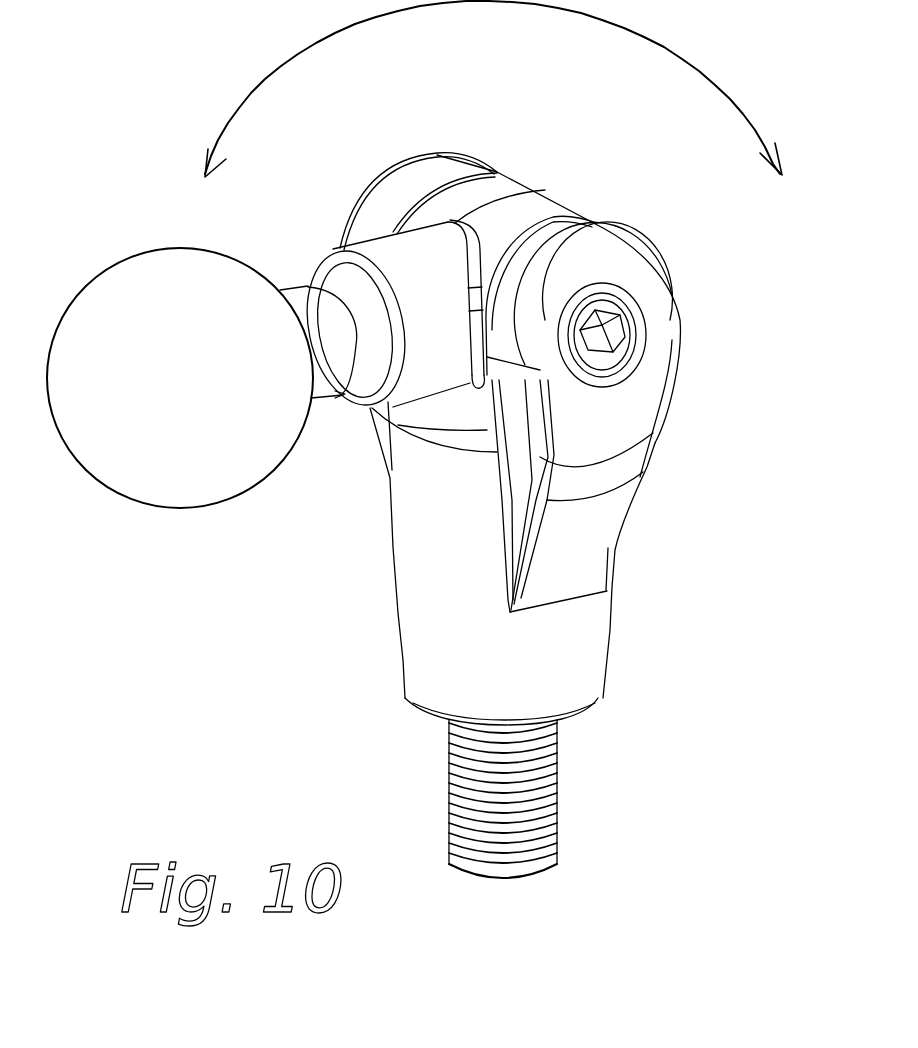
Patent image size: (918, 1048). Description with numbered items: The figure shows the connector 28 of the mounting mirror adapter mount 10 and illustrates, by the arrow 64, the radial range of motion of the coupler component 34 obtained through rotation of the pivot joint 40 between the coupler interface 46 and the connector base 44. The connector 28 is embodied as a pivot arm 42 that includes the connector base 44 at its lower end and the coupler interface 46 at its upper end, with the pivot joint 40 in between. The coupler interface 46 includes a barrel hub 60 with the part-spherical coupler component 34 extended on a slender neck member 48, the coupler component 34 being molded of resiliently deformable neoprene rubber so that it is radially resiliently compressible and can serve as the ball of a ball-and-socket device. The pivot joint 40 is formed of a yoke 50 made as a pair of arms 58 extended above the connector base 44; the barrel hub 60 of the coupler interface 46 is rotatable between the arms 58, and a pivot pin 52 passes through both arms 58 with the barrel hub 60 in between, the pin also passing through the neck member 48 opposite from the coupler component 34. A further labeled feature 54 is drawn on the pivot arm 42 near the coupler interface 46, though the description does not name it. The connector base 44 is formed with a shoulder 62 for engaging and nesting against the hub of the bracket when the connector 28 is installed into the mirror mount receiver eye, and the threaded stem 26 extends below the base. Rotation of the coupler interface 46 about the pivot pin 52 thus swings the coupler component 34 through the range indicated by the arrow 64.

The mounting mirror adapter mount 10 is at (391, 474).
The stem 26 is at (498, 799).
The connector 28 is at (558, 842).
The part-spherical coupler component 34 is at (117, 276).
The pivot joint 40 is at (495, 173).
The pivot arm 42 is at (390, 533).
The connector base 44 is at (400, 606).
The coupler interface 46 is at (333, 250).
The neck member 48 is at (305, 281).
The yoke 50 is at (380, 176).
The pivot pin 52 is at (640, 321).
The collar 54 is at (375, 413).
The arms 58 is at (452, 167).
The barrel hub 60 is at (541, 205).
The shoulder 62 is at (597, 698).
The arrow 64 is at (486, 101).